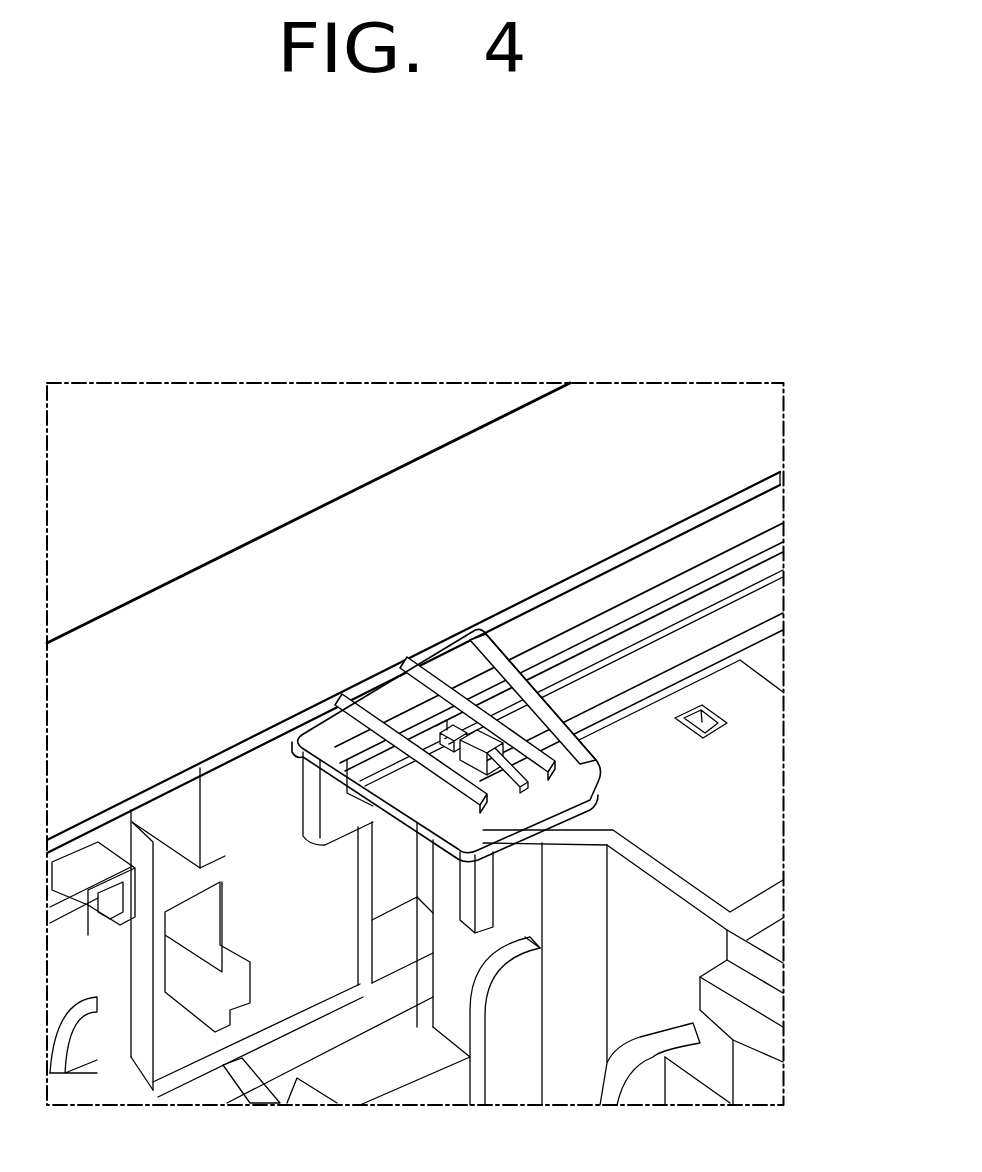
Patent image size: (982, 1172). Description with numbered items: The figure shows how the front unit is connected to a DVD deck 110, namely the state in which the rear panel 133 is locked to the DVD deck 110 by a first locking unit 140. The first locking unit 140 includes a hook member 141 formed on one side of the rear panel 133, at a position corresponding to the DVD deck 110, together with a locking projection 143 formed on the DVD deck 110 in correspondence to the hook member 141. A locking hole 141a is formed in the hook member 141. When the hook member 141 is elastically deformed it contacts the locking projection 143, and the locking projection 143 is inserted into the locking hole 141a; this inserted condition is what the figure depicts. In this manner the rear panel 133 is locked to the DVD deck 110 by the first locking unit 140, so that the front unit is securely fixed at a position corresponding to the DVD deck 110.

The DVD deck 110 is at (750, 857).
The rear panel 133 is at (197, 587).
The first locking unit 140 is at (524, 699).
The hook member 141 is at (483, 677).
The locking hole 141a is at (436, 748).
The locking projection 143 is at (440, 727).